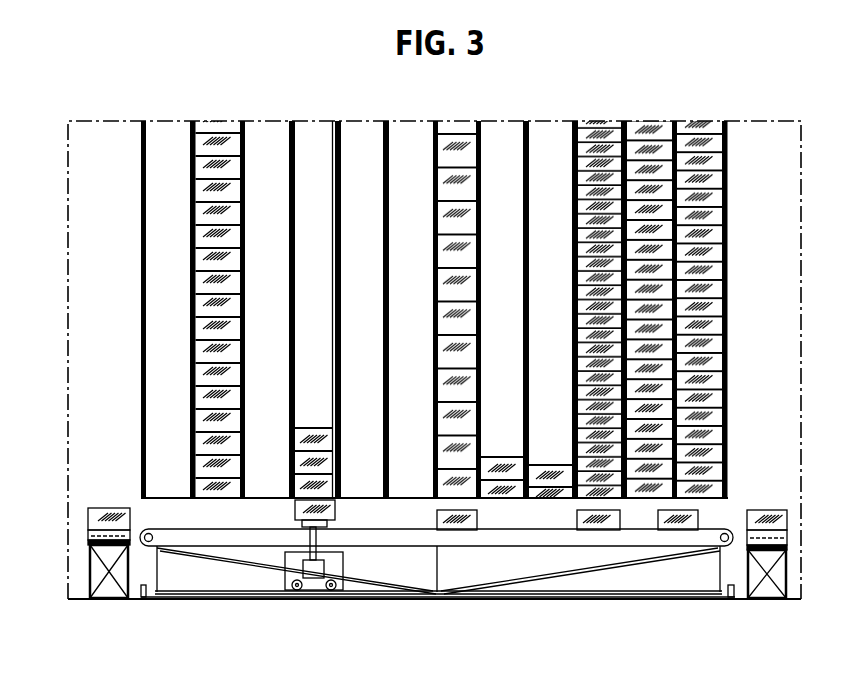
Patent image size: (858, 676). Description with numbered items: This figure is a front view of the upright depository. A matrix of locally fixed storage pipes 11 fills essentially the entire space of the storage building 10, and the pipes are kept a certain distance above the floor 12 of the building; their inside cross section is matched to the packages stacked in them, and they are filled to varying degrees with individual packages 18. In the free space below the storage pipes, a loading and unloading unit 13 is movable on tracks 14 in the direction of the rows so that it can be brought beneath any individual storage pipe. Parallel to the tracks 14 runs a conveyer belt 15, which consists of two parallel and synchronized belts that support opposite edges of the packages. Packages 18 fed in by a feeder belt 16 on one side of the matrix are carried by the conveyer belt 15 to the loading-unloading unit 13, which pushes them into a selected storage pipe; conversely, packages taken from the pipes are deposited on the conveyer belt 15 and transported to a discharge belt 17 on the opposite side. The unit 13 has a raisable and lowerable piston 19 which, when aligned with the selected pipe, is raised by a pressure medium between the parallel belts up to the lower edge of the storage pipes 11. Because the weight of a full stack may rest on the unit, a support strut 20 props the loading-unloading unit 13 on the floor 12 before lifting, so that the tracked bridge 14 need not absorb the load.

The storage building 10 is at (803, 237).
The storage pipes 11 is at (352, 142).
The floor 12 is at (607, 601).
The loading and unloading unit 13 is at (331, 579).
The tracks 14 is at (206, 598).
The conveyer belt 15 is at (227, 529).
The feeder belt 16 is at (790, 538).
The discharge belt 17 is at (95, 538).
The packages 18 is at (623, 223).
The raisable and lowerable piston 19 is at (318, 540).
The support strut 20 is at (306, 590).